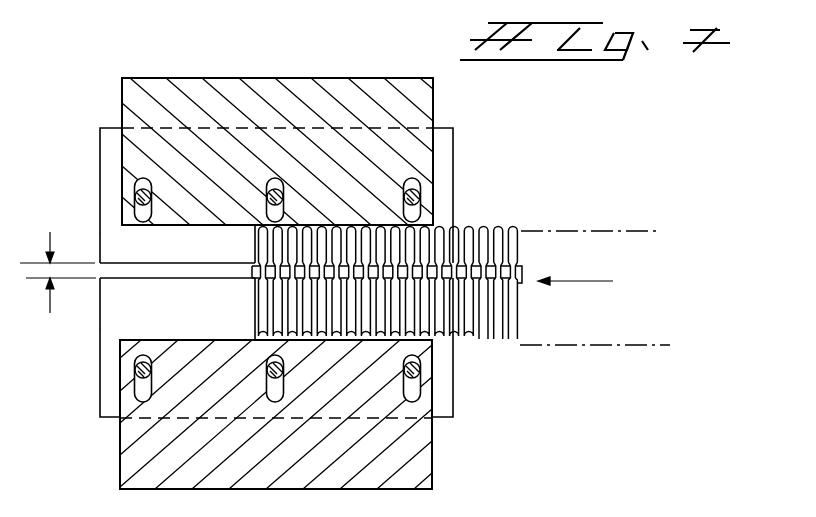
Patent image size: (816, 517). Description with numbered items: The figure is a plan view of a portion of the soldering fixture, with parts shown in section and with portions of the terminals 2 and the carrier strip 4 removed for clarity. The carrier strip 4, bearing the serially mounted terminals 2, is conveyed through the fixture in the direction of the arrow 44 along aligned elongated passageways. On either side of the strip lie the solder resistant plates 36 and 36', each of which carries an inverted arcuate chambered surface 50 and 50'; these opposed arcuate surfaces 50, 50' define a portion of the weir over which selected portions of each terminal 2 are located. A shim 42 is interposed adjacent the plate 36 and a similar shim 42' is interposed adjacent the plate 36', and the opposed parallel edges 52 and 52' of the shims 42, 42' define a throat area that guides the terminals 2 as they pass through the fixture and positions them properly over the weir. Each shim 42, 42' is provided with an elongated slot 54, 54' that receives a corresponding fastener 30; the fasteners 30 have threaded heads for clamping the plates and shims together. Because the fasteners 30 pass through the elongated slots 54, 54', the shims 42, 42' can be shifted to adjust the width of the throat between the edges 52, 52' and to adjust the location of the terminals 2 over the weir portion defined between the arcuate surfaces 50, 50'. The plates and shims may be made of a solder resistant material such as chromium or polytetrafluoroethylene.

The terminals 2 is at (483, 340).
The carrier strip 4 is at (496, 233).
The fasteners 30 is at (417, 198).
The plate 36 is at (246, 179).
The plate 36' is at (246, 347).
The shim 42 is at (309, 151).
The shim 42' is at (302, 415).
The arrow 44 is at (587, 281).
The inverted arcuate chambered surface 50 is at (177, 254).
The inverted arcuate chambered surface 50' is at (177, 295).
The edge 52 is at (85, 201).
The edge 52' is at (91, 343).
The elongated slot 54 is at (316, 200).
The elongated slot 54' is at (310, 405).